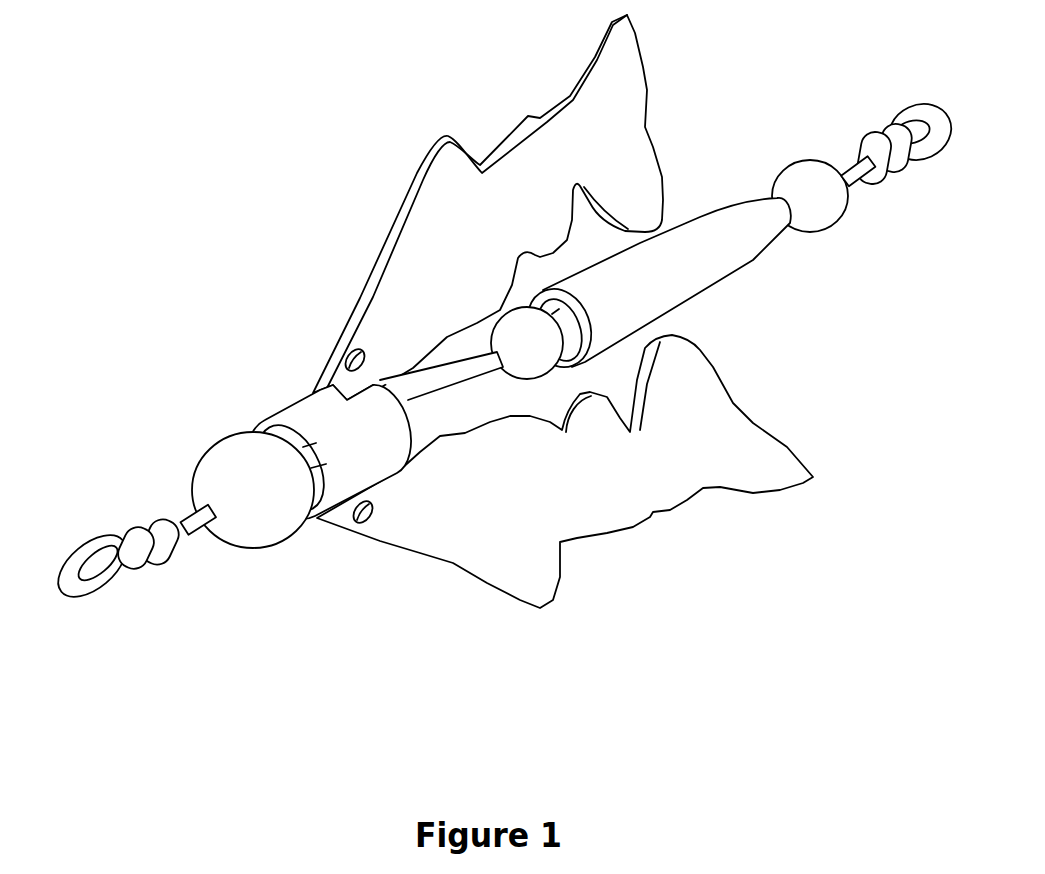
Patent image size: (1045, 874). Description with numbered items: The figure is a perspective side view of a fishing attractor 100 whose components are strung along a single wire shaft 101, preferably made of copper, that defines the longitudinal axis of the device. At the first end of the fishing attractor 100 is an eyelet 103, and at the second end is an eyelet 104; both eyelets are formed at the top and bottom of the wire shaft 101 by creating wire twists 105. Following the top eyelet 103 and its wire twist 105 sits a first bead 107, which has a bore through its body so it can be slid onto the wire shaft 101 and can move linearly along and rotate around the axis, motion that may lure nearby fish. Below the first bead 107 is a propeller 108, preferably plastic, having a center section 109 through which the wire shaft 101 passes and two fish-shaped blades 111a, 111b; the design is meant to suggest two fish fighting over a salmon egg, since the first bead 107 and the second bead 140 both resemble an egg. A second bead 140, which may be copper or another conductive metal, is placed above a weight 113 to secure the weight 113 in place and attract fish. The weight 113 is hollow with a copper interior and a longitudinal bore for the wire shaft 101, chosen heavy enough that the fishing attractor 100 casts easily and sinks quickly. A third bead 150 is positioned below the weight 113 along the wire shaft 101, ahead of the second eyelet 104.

The fishing attractor 100 is at (196, 202).
The wire shaft 101 is at (173, 492).
The eyelet 103 is at (83, 519).
The eyelet 104 is at (926, 185).
The wire twists 105 is at (166, 587).
The first bead 107 is at (221, 413).
The propeller 108 is at (310, 545).
The center section 109 is at (289, 382).
The blade 111a is at (369, 239).
The blade 111b is at (631, 561).
The weight 113 is at (735, 180).
The second bead 140 is at (493, 390).
The third bead 150 is at (818, 255).